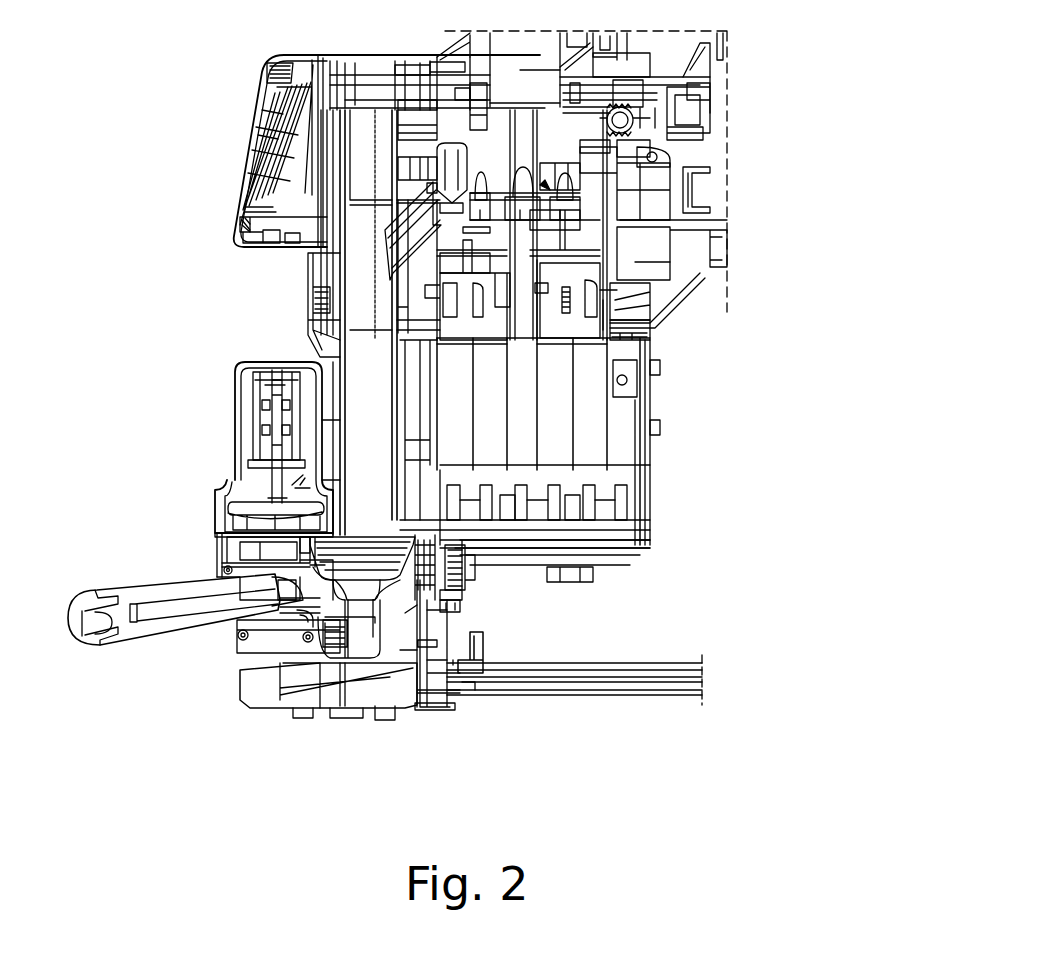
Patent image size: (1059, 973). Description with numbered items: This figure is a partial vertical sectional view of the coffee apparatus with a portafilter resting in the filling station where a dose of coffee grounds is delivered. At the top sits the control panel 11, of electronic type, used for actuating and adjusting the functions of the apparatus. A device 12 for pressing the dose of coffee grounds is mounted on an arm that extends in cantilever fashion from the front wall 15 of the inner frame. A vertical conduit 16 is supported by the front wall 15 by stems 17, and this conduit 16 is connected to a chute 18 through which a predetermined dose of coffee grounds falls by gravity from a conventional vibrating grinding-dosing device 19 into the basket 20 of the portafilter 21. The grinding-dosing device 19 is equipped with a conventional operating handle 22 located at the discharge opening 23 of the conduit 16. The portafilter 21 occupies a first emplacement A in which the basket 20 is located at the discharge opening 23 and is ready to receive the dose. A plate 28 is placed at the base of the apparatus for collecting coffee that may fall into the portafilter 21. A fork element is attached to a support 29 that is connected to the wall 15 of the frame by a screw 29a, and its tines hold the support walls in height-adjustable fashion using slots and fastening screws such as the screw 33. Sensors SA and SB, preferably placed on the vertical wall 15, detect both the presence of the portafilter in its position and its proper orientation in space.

The control panel 11 is at (245, 165).
The device for pressing the dose of coffee grounds 12 is at (218, 368).
The front wall 15 is at (430, 510).
The vertical conduit 16 is at (338, 393).
The stems 17 is at (438, 460).
The chute 18 is at (400, 243).
The vibrating grinding-dosing device 19 is at (548, 185).
The basket 20 is at (345, 535).
The portafilter 21 is at (235, 575).
The operating handle 22 is at (107, 592).
The discharge opening 23 is at (355, 488).
The plate 28 is at (387, 677).
The support 29 is at (478, 652).
The screw 29a is at (430, 697).
The fastening screw 33 is at (242, 640).
The first emplacement A is at (577, 507).
The sensor SA is at (447, 585).
The sensor SB is at (282, 556).